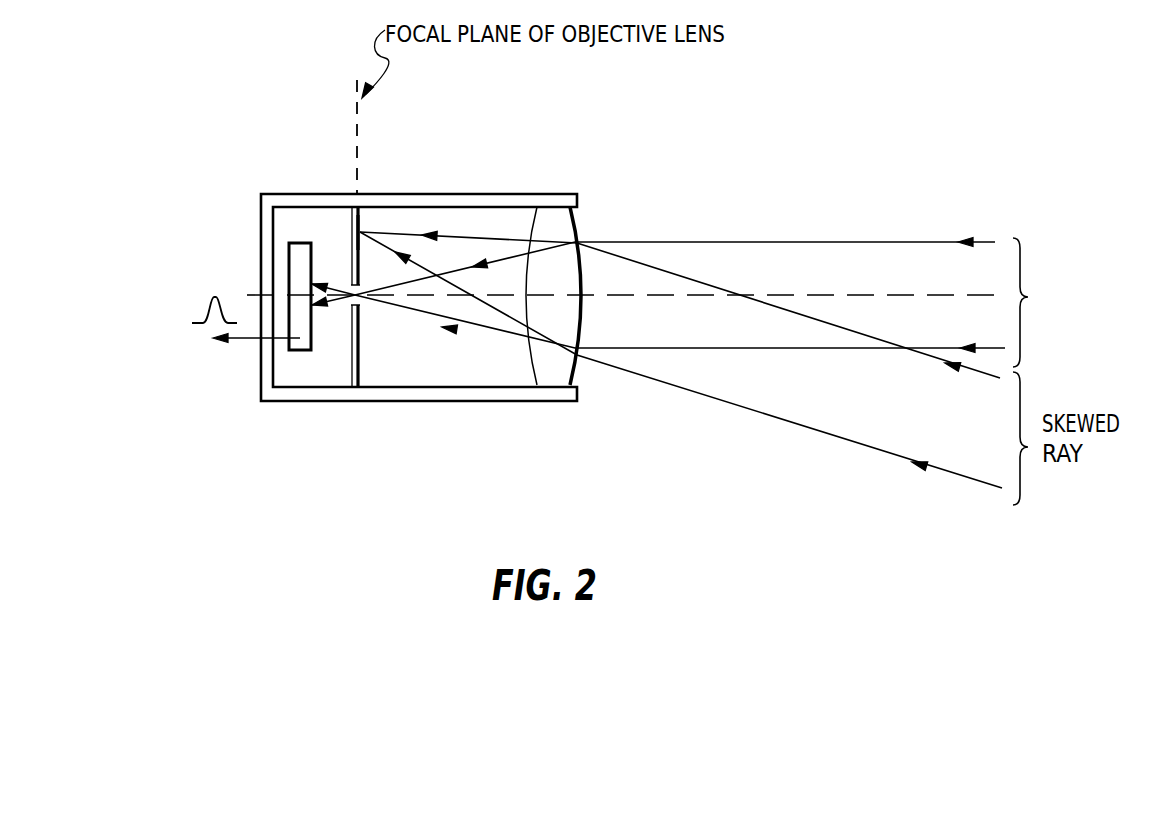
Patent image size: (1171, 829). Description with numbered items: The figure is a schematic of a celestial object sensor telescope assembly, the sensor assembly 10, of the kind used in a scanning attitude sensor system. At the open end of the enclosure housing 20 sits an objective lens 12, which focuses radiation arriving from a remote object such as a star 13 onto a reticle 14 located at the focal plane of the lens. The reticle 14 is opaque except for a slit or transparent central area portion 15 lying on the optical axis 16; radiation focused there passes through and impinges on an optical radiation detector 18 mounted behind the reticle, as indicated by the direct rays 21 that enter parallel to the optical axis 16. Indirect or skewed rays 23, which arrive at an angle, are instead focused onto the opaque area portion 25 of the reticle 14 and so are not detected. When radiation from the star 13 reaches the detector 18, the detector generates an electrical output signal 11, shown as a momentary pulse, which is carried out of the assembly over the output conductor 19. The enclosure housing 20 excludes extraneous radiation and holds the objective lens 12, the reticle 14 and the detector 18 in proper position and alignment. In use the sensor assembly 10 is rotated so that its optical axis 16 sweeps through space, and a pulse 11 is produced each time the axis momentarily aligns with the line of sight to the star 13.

The sensor assembly 10 is at (205, 461).
The electrical output signal 11 is at (202, 319).
The objective lens 12 is at (576, 226).
The star 13 is at (1073, 302).
The reticle 14 is at (360, 363).
The transparent central area portion 15 is at (352, 283).
The optical axis 16 is at (952, 295).
The optical radiation detector 18 is at (292, 247).
The output conductor 19 is at (247, 339).
The enclosure housing 20 is at (507, 402).
The direct rays 21 is at (800, 243).
The indirect rays 23 is at (918, 356).
The opaque area portion 25 is at (360, 222).